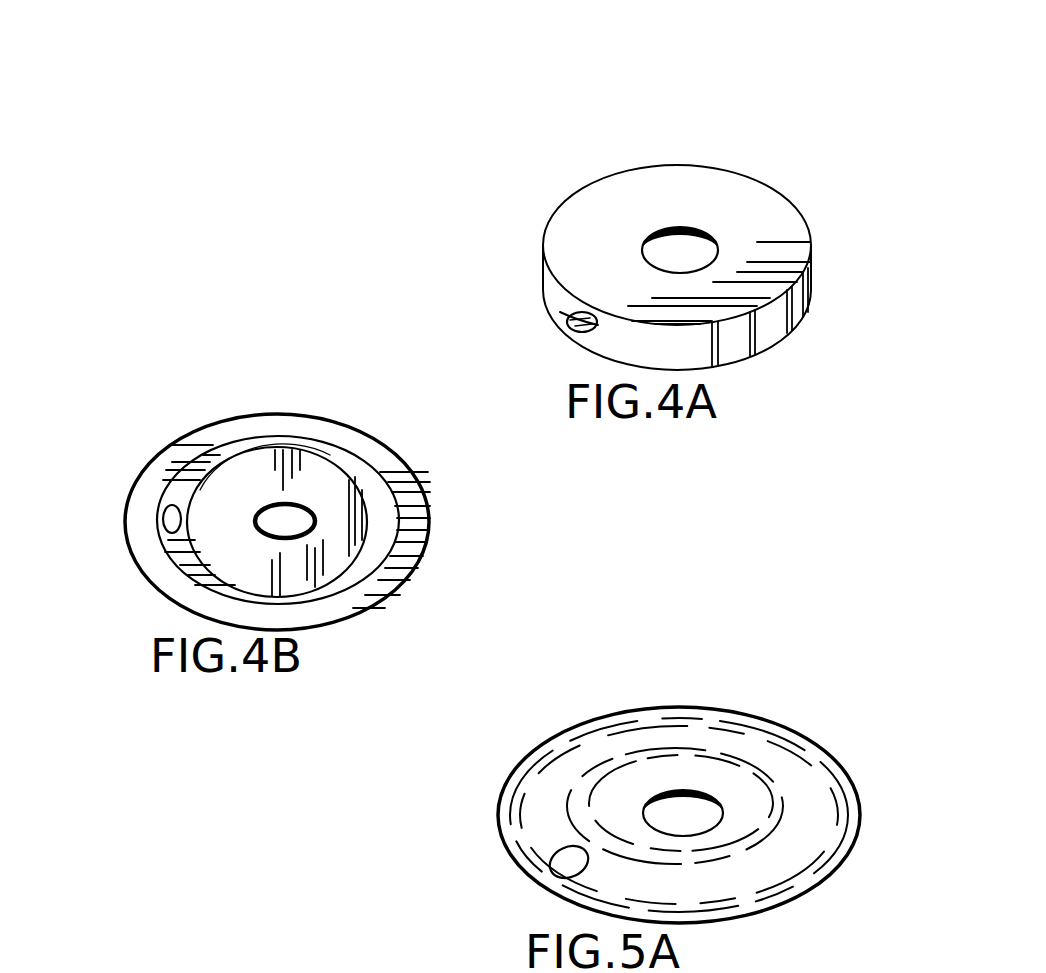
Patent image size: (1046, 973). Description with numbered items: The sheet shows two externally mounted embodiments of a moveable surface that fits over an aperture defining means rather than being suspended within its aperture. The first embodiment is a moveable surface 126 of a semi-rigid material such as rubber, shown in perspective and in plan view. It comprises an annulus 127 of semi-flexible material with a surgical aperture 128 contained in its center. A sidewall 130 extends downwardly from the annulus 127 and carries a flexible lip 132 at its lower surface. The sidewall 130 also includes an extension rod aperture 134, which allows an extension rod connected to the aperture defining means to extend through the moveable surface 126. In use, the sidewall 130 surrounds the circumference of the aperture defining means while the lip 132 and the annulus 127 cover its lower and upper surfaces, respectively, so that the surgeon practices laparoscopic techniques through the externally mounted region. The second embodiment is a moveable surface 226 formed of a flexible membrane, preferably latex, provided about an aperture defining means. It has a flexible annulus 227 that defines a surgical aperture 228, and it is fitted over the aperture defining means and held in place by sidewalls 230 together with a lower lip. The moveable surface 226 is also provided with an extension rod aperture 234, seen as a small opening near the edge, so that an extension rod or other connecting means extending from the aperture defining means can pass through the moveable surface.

In FIG. 4A, the moveable surface 126 is at (536, 201).
In FIG. 4A, the annulus 127 is at (645, 183).
In FIG. 4B, the annulus 127 is at (263, 462).
In FIG. 4A, the surgical aperture 128 is at (691, 248).
In FIG. 4B, the surgical aperture 128 is at (300, 517).
In FIG. 4A, the sidewall 130 is at (555, 290).
In FIG. 4B, the sidewall 130 is at (193, 470).
In FIG. 4A, the flexible lip 132 is at (575, 330).
In FIG. 4B, the flexible lip 132 is at (233, 430).
In FIG. 4A, the extension rod aperture 134 is at (572, 320).
In FIG. 4B, the extension rod aperture 134 is at (168, 520).
In FIG. 5A, the moveable surface 226 is at (480, 786).
In FIG. 5A, the flexible annulus 227 is at (725, 773).
In FIG. 5A, the surgical aperture 228 is at (685, 812).
In FIG. 5A, the sidewalls 230 is at (797, 775).
In FIG. 5A, the extension rod aperture 234 is at (562, 862).